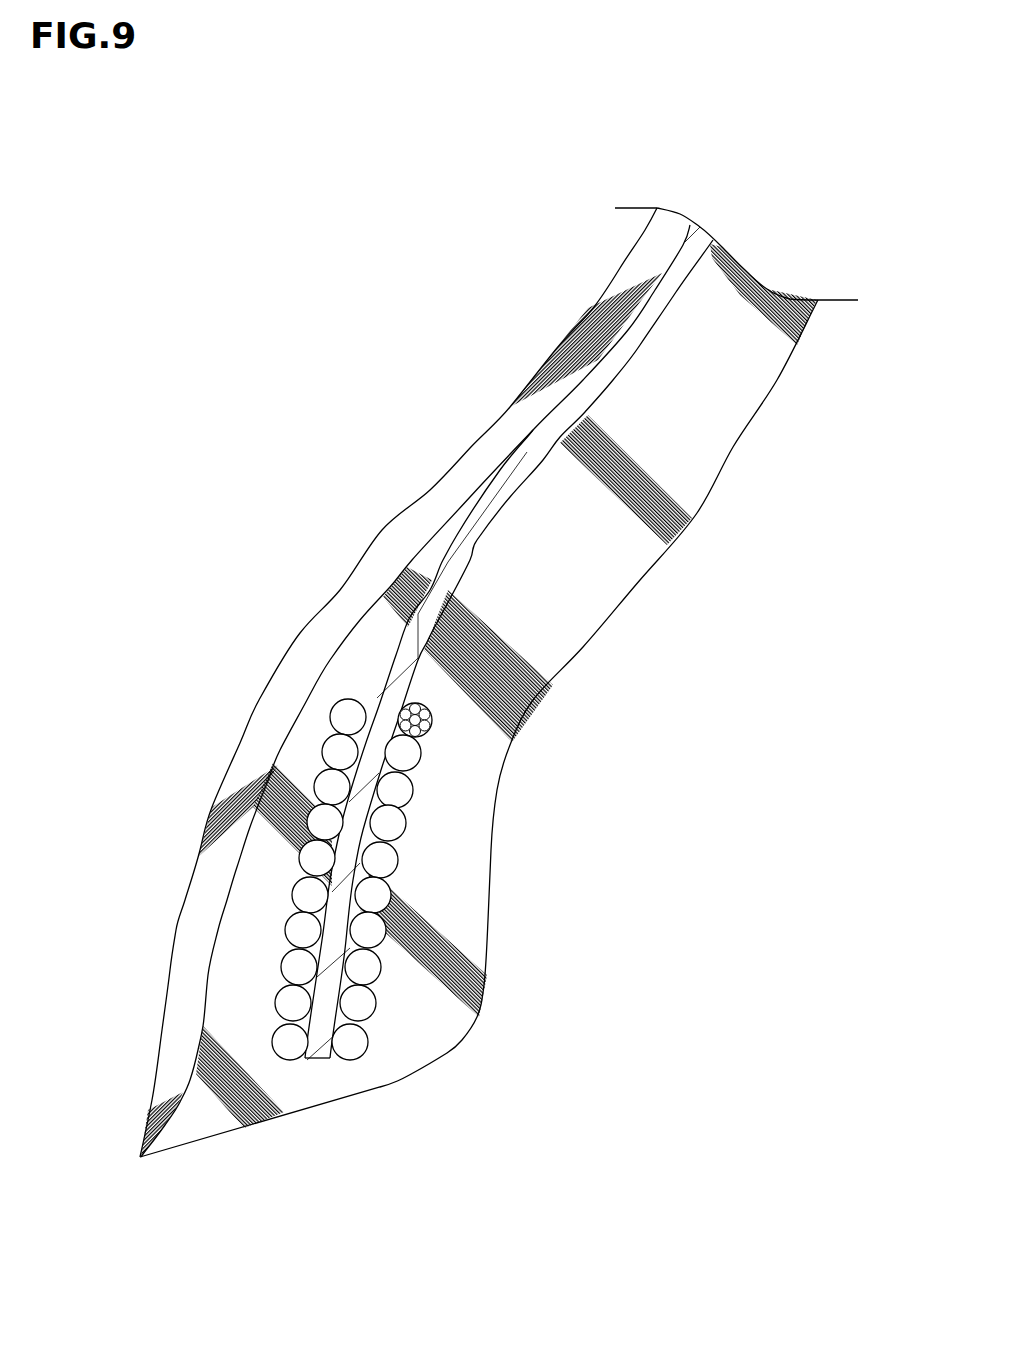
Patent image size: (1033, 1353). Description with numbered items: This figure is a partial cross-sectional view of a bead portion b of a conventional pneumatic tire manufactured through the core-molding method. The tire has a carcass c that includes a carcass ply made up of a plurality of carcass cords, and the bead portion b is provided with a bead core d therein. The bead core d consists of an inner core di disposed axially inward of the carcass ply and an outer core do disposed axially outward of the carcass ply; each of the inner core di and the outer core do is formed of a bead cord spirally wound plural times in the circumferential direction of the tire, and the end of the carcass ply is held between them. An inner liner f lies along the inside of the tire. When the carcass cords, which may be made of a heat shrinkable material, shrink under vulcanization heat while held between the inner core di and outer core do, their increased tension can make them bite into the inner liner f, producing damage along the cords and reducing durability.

The inner liner f is at (418, 515).
The carcass c is at (535, 485).
The bead portion b is at (483, 1018).
The inner core di is at (288, 1061).
The outer core do is at (350, 1061).
The bead core d is at (358, 997).